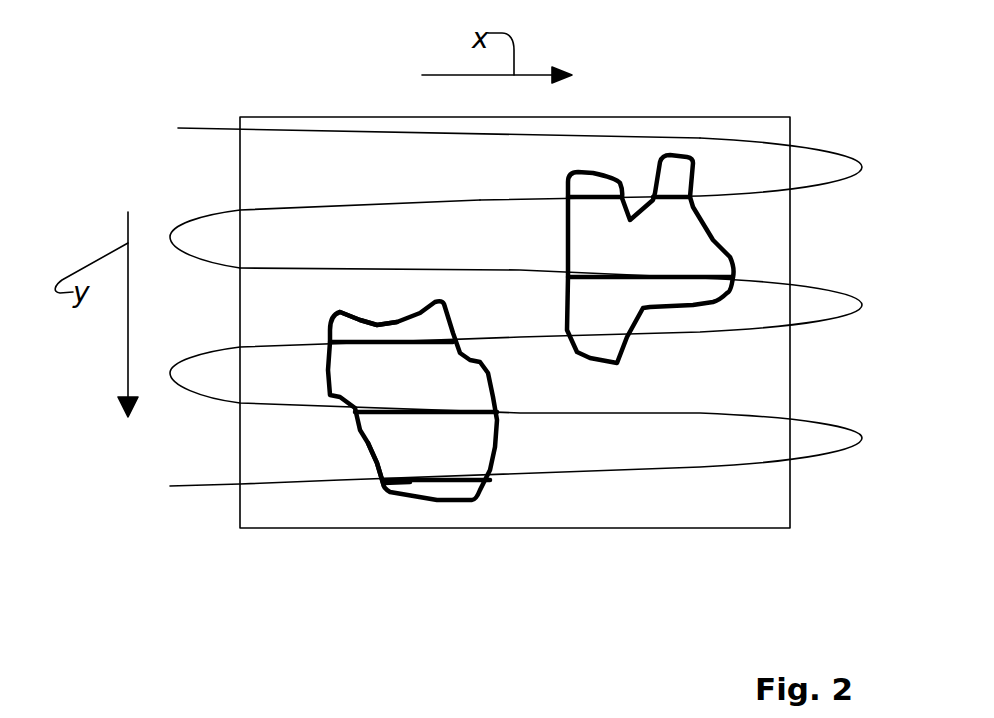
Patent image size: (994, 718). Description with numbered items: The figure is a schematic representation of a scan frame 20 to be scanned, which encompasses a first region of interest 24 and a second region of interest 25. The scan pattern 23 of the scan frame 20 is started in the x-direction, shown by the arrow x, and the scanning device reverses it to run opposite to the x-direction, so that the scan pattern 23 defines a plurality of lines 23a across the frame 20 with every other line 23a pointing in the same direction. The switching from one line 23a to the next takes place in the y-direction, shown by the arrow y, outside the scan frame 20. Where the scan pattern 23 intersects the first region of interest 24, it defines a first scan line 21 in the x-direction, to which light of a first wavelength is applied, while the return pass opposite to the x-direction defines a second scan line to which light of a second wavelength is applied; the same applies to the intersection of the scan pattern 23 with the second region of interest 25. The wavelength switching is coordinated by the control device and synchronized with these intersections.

The scan frame 20 is at (758, 528).
The first scan line 21 is at (462, 410).
The scan pattern 23 is at (218, 128).
The line 23a is at (315, 172).
The first region of interest 24 is at (500, 338).
The second region of interest 25 is at (390, 495).